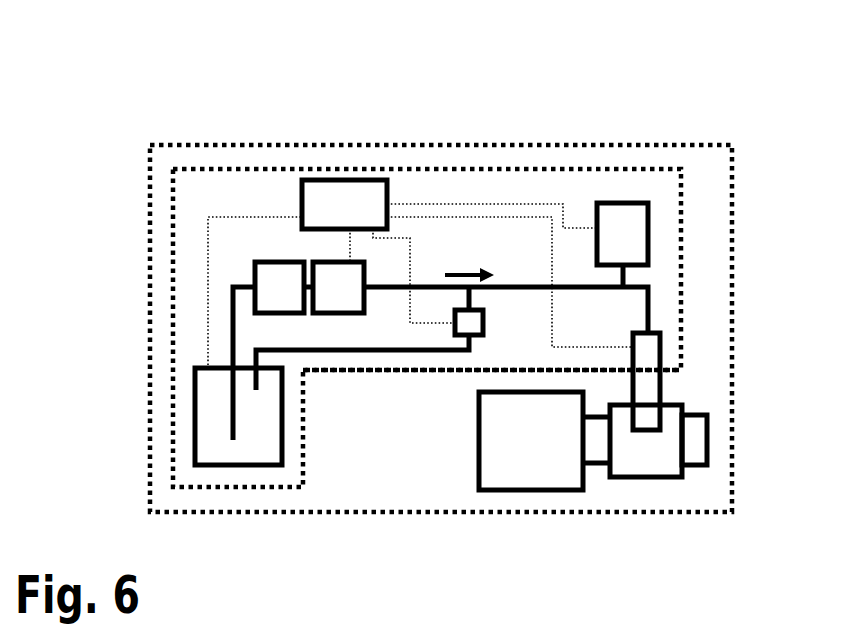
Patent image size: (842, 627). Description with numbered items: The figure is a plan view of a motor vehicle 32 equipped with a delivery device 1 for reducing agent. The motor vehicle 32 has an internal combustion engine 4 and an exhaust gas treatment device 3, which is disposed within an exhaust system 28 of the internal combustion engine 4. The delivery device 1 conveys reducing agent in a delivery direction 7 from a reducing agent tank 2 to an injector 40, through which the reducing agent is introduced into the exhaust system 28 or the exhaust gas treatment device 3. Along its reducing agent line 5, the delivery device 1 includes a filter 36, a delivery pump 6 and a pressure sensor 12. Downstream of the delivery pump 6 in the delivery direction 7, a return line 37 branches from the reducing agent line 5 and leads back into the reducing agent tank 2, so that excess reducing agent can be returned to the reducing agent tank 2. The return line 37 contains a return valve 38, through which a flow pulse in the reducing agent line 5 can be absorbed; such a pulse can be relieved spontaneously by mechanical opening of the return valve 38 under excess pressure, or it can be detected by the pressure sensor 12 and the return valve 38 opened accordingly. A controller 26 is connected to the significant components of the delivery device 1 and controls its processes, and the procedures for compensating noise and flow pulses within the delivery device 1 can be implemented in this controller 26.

The delivery device 1 is at (647, 169).
The reducing agent tank 2 is at (193, 395).
The exhaust gas treatment device 3 is at (683, 405).
The internal combustion engine 4 is at (563, 490).
The reducing agent line 5 is at (507, 287).
The delivery pump 6 is at (313, 265).
The delivery direction 7 is at (460, 275).
The pressure sensor 12 is at (600, 203).
The controller 26 is at (323, 180).
The exhaust system 28 is at (697, 465).
The motor vehicle 32 is at (150, 145).
The filter 36 is at (253, 275).
The return line 37 is at (333, 370).
The return valve 38 is at (455, 337).
The injector 40 is at (660, 333).